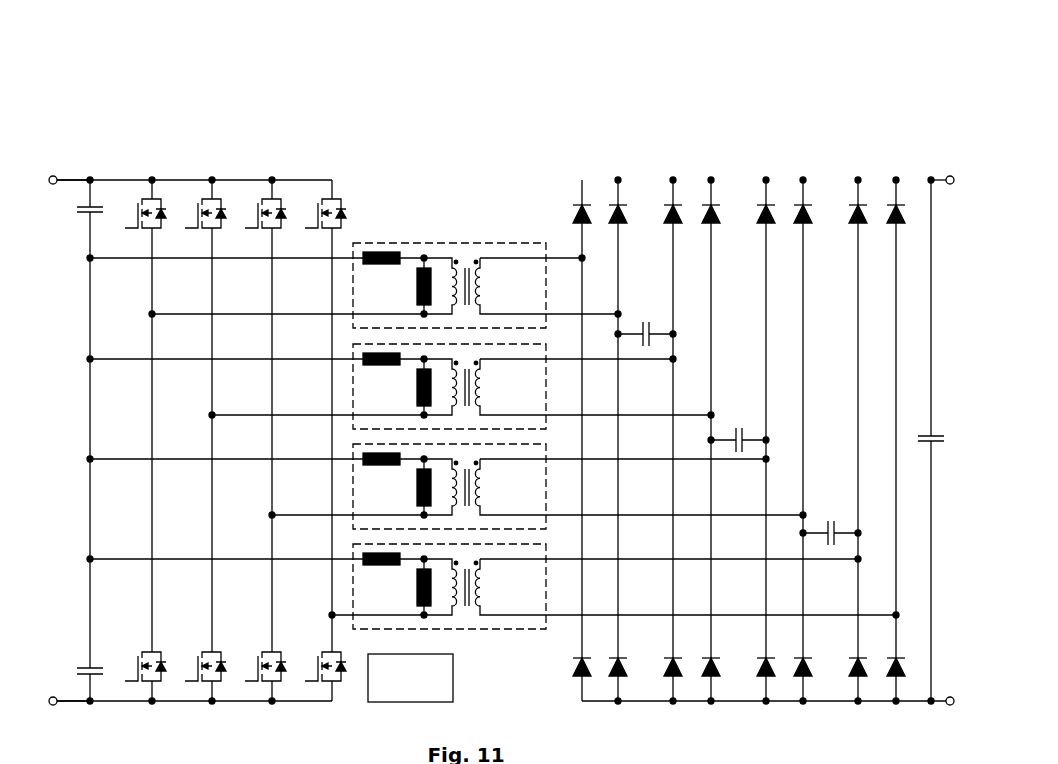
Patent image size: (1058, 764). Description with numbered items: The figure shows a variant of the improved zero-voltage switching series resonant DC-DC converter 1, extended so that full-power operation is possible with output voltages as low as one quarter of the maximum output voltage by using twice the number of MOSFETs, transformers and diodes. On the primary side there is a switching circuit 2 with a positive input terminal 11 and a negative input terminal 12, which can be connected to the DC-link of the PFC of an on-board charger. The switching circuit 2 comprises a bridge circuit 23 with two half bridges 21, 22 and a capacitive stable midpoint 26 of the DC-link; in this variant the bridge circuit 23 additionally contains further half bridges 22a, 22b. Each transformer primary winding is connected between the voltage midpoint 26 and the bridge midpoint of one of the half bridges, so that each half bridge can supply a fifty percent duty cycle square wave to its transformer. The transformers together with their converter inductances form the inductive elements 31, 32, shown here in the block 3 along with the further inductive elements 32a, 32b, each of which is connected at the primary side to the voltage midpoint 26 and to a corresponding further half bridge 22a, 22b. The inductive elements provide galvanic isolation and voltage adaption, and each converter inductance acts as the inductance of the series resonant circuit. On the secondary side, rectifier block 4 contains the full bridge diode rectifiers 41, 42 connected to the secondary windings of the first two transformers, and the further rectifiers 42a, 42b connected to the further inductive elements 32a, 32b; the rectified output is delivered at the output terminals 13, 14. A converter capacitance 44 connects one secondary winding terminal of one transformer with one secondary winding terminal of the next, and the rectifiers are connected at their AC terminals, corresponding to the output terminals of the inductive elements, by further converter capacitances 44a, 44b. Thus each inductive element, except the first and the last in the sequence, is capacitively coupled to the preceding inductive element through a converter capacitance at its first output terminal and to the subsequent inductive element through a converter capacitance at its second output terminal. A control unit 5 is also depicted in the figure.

The power conversion system 1 is at (118, 762).
The switching circuit 2 is at (337, 50).
The transformer module block 3 is at (460, 184).
The rectifier circuit 4 is at (578, 102).
The control unit 5 is at (426, 691).
The positive input terminal 11 is at (70, 176).
The negative input terminal 12 is at (53, 696).
The first output terminal 13 is at (931, 176).
The second output terminal 14 is at (584, 701).
The half bridge 21 is at (138, 157).
The half bridge 22 is at (195, 157).
The further half bridge 22a is at (250, 157).
The further half bridge 22b is at (310, 157).
The bridge circuit 23 is at (139, 102).
The capacitive stable midpoint 26 is at (88, 440).
The inductive element 31 is at (449, 285).
The inductive element 32 is at (449, 386).
The further inductive element 32a is at (449, 486).
The further inductive element 32b is at (449, 586).
The full bridge diode rectifier 41 is at (640, 156).
The full bridge diode rectifier 42 is at (657, 156).
The further rectifier 42a is at (748, 156).
The further rectifier 42b is at (840, 156).
The converter capacitance 44 is at (645, 320).
The further converter capacitance 44a is at (738, 426).
The further converter capacitance 44b is at (831, 519).